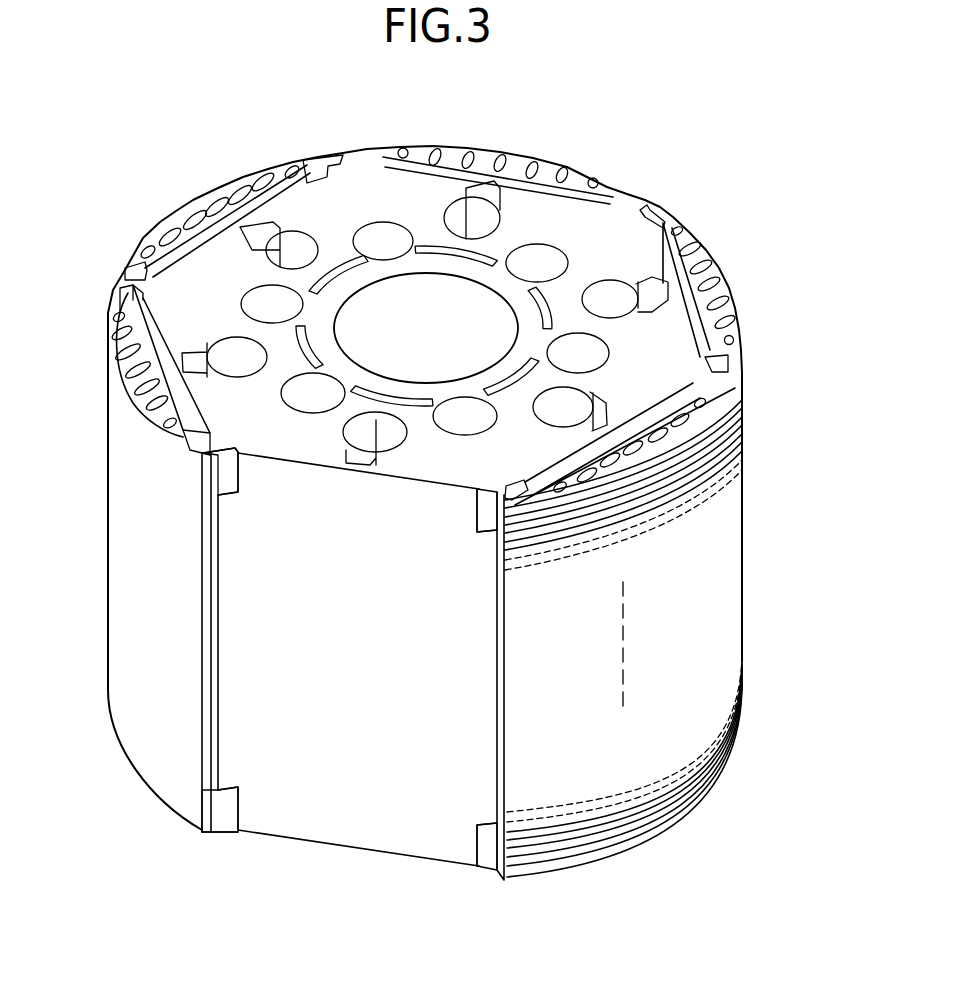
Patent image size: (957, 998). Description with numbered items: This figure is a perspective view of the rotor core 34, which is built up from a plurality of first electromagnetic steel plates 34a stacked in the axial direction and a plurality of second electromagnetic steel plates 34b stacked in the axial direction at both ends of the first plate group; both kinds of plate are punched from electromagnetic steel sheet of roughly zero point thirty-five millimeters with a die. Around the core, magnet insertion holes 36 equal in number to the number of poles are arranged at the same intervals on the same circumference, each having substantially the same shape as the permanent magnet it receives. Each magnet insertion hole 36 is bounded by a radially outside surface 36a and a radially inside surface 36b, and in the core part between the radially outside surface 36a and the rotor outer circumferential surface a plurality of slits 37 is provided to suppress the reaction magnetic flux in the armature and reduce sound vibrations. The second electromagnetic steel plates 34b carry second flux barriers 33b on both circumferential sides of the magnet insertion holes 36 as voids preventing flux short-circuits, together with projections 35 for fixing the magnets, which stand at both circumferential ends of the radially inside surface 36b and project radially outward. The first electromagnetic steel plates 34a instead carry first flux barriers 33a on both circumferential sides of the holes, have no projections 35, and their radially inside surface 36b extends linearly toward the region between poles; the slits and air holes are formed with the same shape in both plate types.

The first flux barrier 33a is at (227, 593).
The second flux barrier 33b is at (650, 205).
The rotor core 34 is at (651, 533).
The first electromagnetic steel plate 34a is at (655, 512).
The second electromagnetic steel plate 34b is at (670, 498).
The projection 35 is at (352, 160).
The magnet insertion hole 36 is at (297, 474).
The radially outside surface 36a is at (683, 287).
The radially inside surface 36b is at (683, 306).
The slit 37 is at (708, 255).